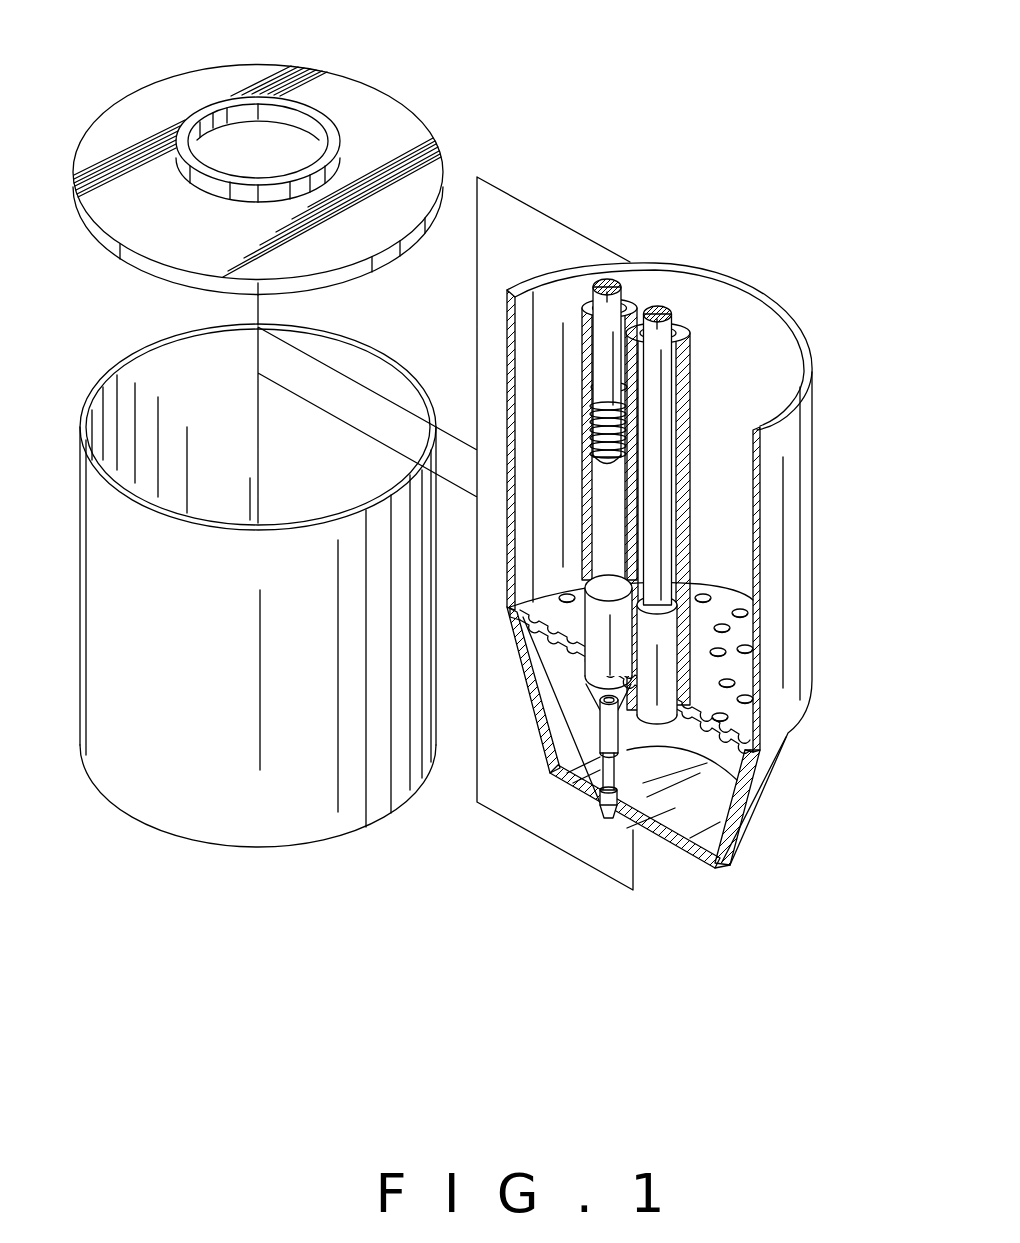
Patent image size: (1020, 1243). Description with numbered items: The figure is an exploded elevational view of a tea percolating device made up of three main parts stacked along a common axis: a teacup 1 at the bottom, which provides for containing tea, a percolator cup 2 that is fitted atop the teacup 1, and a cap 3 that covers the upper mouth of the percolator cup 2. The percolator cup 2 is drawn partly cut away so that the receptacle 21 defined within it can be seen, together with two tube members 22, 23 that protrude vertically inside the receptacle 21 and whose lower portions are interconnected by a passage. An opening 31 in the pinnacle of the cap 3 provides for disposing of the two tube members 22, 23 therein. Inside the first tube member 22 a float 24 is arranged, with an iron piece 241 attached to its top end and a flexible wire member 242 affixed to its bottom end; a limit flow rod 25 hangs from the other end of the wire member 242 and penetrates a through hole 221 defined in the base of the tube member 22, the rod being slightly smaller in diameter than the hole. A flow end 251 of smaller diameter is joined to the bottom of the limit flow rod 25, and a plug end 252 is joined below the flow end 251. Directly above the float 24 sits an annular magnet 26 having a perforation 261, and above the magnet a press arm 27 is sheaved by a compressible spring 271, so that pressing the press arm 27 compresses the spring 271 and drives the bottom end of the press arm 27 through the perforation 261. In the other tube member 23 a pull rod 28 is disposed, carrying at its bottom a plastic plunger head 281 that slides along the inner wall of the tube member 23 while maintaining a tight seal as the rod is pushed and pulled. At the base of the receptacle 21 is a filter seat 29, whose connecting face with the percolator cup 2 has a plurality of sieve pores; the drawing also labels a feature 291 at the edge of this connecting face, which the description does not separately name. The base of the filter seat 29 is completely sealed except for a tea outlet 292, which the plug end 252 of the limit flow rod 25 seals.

The teacup 1 is at (118, 567).
The percolator cup 2 is at (793, 472).
The cap 3 is at (378, 147).
The opening 31 is at (277, 132).
The receptacle 21 is at (742, 352).
The tube member 22 is at (640, 302).
The tube member 23 is at (687, 330).
The float 24 is at (600, 625).
The iron piece 241 is at (588, 562).
The wire member 242 is at (590, 693).
The through hole 221 is at (605, 730).
The limit flow rod 25 is at (555, 752).
The flow end 251 is at (602, 800).
The plug end 252 is at (603, 808).
The annular magnet 26 is at (590, 453).
The perforation 261 is at (620, 457).
The press arm 27 is at (607, 340).
The spring 271 is at (593, 400).
The pull rod 28 is at (660, 385).
The plunger head 281 is at (725, 660).
The filter seat 29 is at (770, 770).
The notched plate 291 is at (737, 683).
The tea outlet 292 is at (640, 827).